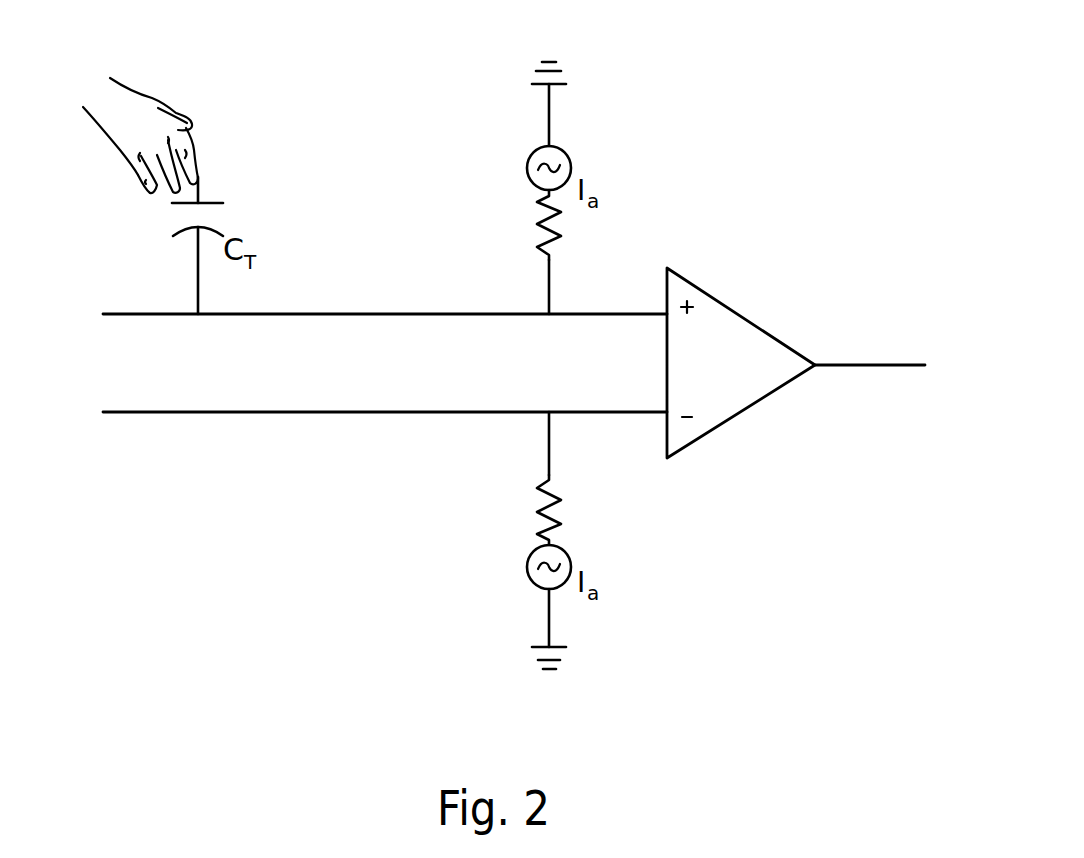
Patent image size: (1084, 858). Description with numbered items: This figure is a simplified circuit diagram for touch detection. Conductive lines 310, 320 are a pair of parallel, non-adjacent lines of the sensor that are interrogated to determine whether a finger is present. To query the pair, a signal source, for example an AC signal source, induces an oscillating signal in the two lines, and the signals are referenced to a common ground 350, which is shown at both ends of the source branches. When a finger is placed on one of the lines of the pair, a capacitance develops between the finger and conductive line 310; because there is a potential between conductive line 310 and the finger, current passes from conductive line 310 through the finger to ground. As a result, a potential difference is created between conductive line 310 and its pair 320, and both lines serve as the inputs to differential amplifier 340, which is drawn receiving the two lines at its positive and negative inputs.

The conductive line 310 is at (118, 318).
The conductive line 320 is at (140, 415).
The differential amplifier 340 is at (725, 420).
The common ground 350 is at (562, 70).